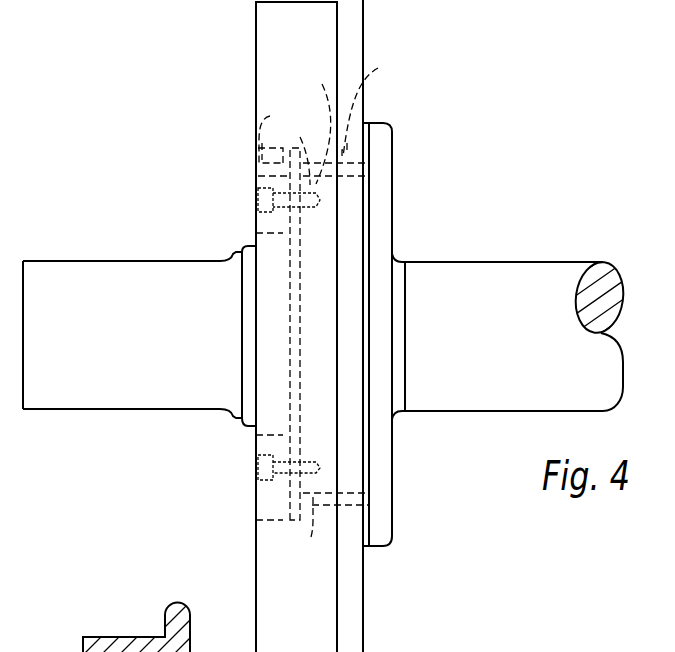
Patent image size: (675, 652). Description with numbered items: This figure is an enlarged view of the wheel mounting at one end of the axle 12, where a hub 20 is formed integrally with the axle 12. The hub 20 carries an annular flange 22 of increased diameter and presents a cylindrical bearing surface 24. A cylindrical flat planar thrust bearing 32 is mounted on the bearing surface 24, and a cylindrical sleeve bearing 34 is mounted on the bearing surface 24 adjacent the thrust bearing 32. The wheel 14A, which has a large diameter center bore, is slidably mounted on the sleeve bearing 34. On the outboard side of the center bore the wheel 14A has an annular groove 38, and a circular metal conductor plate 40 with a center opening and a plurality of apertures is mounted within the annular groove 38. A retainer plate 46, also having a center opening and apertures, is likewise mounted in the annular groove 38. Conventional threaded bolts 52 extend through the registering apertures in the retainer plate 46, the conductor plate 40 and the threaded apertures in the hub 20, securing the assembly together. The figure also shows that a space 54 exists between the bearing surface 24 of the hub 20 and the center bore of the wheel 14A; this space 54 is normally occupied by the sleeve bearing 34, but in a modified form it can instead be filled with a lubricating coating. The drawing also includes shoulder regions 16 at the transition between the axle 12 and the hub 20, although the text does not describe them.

The axle 12 is at (72, 410).
The wheel 14A is at (263, 32).
The hub shoulder 16 is at (243, 422).
The hub 20 is at (301, 138).
The annular flange 22 is at (391, 126).
The cylindrical bearing surface 24 is at (312, 538).
The thrust bearing 32 is at (366, 122).
The sleeve bearing 34 is at (322, 84).
The annular groove 38 is at (255, 163).
The conductor plate 40 is at (258, 175).
The retainer plate 46 is at (270, 117).
The threaded bolts 52 is at (262, 200).
The space 54 is at (378, 68).